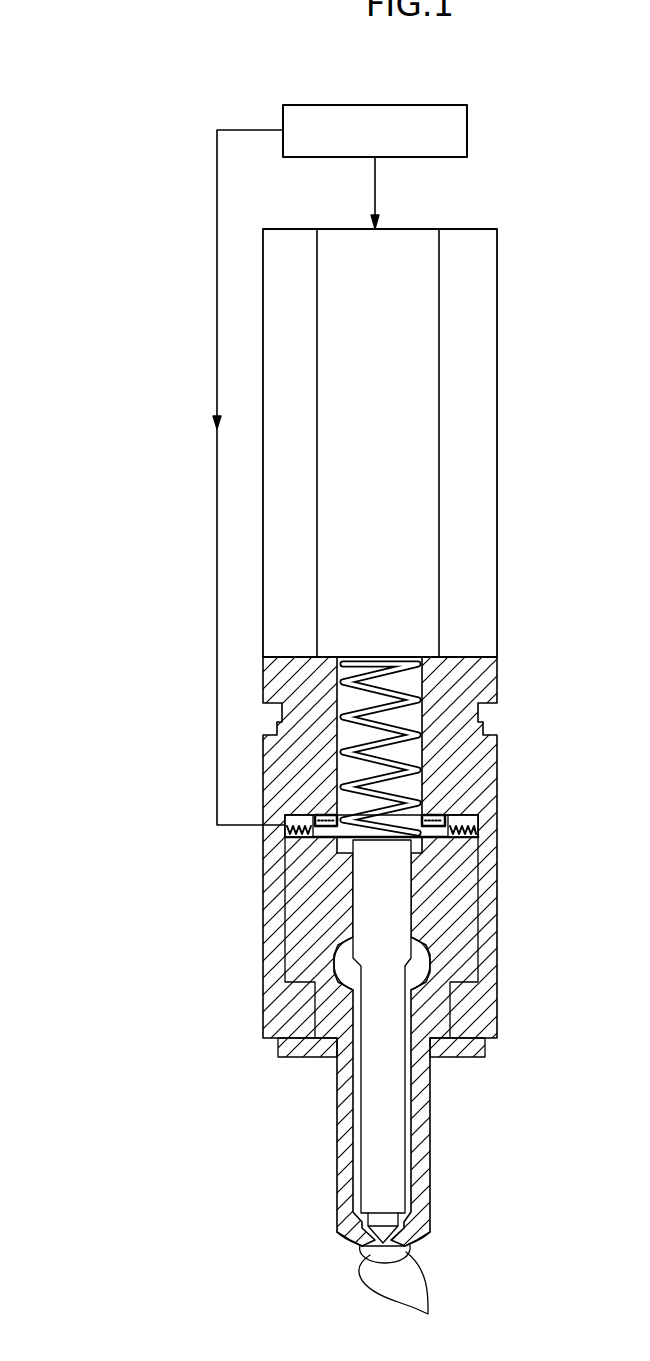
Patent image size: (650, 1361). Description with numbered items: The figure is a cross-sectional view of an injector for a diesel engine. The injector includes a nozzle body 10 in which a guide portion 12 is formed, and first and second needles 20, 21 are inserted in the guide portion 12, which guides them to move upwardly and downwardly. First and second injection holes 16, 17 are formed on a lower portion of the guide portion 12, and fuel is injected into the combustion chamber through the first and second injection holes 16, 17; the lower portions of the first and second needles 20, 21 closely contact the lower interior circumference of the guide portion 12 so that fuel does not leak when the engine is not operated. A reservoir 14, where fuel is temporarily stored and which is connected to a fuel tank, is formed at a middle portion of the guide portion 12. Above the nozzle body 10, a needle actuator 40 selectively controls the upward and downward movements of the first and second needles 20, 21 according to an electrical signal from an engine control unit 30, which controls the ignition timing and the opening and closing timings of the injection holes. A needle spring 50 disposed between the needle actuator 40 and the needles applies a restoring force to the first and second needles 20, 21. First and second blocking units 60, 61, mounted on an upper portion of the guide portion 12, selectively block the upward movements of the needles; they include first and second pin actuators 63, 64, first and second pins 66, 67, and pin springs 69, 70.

The nozzle body 10 is at (445, 913).
The guide portion 12 is at (358, 1118).
The reservoir 14 is at (417, 965).
The first injection hole 16 is at (411, 1297).
The second injection hole 17 is at (411, 1297).
The first needle 20 is at (441, 1041).
The second needle 21 is at (380, 1163).
The engine control unit (ECU) 30 is at (455, 136).
The needle actuator 40 is at (388, 456).
The needle spring 50 is at (405, 680).
The first blocking unit 60 is at (275, 788).
The second blocking unit 61 is at (327, 813).
The first pin actuator 63 is at (307, 854).
The second pin actuator 64 is at (287, 850).
The first pin 66 is at (315, 889).
The second pin 67 is at (323, 835).
The pin spring 69 is at (215, 477).
The pin spring 70 is at (288, 802).